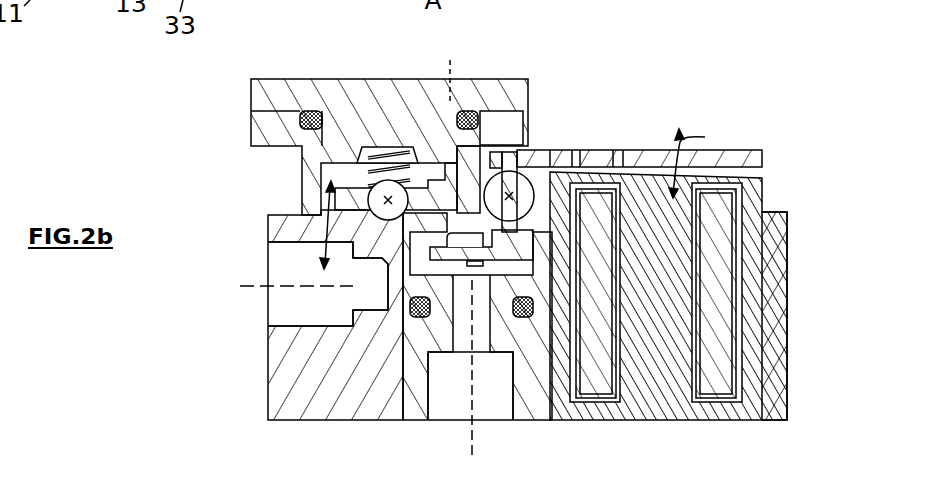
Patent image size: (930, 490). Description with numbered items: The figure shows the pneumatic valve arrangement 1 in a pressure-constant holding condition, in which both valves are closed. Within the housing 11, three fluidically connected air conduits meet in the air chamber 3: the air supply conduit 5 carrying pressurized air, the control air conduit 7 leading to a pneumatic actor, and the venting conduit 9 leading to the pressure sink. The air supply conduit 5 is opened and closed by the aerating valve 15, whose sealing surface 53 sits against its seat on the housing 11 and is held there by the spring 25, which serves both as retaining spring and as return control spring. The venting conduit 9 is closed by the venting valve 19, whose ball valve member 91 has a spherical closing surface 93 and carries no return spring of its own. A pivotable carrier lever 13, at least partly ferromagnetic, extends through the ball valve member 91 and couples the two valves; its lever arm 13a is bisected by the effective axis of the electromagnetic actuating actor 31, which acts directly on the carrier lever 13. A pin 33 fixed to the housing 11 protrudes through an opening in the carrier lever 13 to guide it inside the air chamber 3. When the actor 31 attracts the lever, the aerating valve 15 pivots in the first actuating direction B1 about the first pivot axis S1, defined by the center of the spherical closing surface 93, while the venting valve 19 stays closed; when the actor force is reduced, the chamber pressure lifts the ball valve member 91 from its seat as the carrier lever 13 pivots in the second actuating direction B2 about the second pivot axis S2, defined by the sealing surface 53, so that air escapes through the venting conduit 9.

The pneumatic valve arrangement 1 is at (562, 97).
The air chamber 3 is at (414, 266).
The air supply conduit 5 is at (289, 277).
The control air conduit 7 is at (480, 388).
The venting conduit 9 is at (524, 216).
The housing 11 is at (315, 390).
The carrier lever 13 is at (450, 262).
The lever arm 13a is at (634, 150).
The aerating valve 15 is at (354, 183).
The venting valve 19 is at (533, 148).
The spring 25 is at (385, 160).
The actuating actor 31 is at (756, 200).
The pin 33 is at (473, 268).
The spherical sealing surface 53 is at (375, 218).
The ball valve member 91 is at (494, 190).
The spherical closing surface 93 is at (450, 68).
The first pivot axis S1 is at (514, 193).
The second pivot axis S2 is at (384, 200).
The first actuating direction B1 is at (372, 220).
The second actuating direction B2 is at (702, 157).